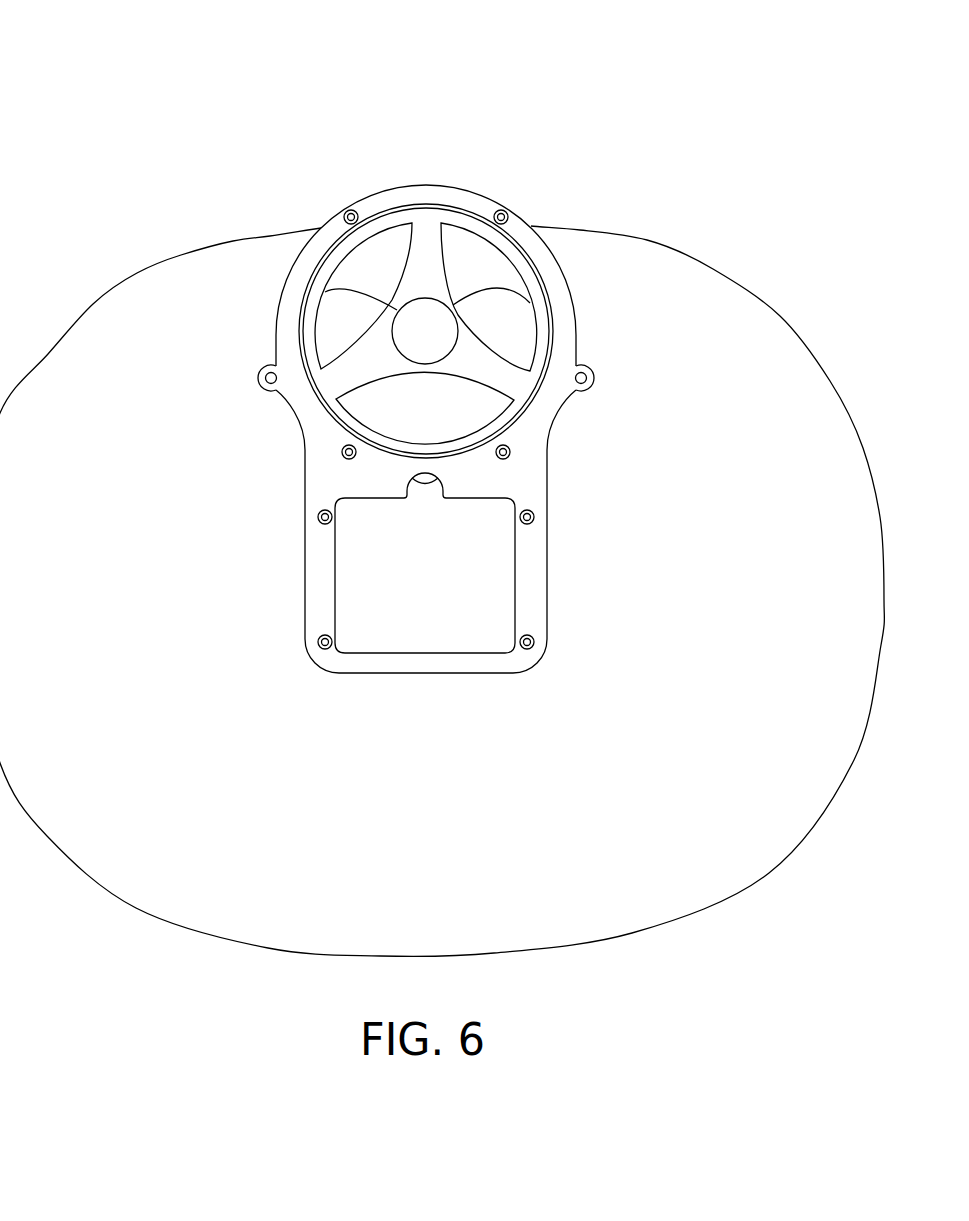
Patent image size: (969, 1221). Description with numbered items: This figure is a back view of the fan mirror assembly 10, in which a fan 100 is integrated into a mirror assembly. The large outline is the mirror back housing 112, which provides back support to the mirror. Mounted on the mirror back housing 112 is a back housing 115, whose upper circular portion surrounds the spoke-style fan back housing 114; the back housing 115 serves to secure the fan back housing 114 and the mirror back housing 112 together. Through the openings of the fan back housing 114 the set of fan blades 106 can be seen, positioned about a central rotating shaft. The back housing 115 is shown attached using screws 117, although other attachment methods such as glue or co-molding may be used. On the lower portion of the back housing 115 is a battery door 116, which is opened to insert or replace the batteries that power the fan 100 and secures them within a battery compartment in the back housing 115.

The fan mirror assembly 10 is at (62, 69).
The fan 100 is at (457, 190).
The fan blades 106 is at (343, 312).
The mirror back housing 112 is at (405, 809).
The fan back housing 114 is at (395, 218).
The back housing 115 is at (320, 587).
The battery door 116 is at (479, 579).
The screws 117 is at (266, 367).